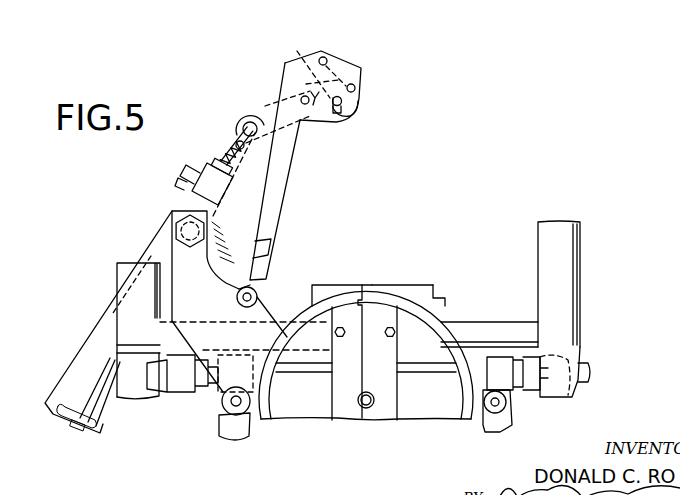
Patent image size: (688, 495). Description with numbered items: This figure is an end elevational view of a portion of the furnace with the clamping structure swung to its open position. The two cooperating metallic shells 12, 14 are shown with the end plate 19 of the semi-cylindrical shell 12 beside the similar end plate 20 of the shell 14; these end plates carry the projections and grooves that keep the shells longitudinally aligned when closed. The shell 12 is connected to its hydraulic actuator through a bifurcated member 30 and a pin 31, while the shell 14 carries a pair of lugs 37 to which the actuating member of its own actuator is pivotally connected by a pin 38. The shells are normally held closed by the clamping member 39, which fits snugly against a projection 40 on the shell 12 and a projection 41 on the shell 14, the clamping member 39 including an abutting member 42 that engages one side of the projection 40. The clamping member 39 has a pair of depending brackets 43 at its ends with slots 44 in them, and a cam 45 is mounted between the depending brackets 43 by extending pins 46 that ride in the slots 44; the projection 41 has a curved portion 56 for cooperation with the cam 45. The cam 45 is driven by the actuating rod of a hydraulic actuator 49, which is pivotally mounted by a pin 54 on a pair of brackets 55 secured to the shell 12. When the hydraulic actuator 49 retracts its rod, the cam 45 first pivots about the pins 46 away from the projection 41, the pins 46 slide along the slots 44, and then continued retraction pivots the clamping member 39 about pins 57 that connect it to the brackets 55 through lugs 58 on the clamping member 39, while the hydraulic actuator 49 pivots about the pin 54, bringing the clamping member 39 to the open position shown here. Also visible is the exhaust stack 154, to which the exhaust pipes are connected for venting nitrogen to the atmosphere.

The metallic shell 12 is at (253, 414).
The metallic shell 14 is at (456, 411).
The plate 19 is at (304, 404).
The end plate 20 is at (435, 404).
The bifurcated member 30 is at (211, 424).
The pin 31 is at (214, 396).
The lugs 37 is at (445, 362).
The pin 38 is at (498, 395).
The clamping member 39 is at (284, 158).
The projection 40 is at (329, 277).
The projection 41 is at (408, 277).
The abutting member 42 is at (262, 232).
The depending brackets 43 is at (345, 56).
The slots 44 is at (350, 103).
The cam 45 is at (296, 79).
The extending pins 46 is at (345, 90).
The hydraulic actuator 49 is at (82, 362).
The pin 54 is at (165, 205).
The brackets 55 is at (163, 233).
The curved portion 56 is at (434, 290).
The pins 57 is at (248, 282).
The lugs 58 is at (229, 289).
The exhaust stack 154 is at (109, 268).